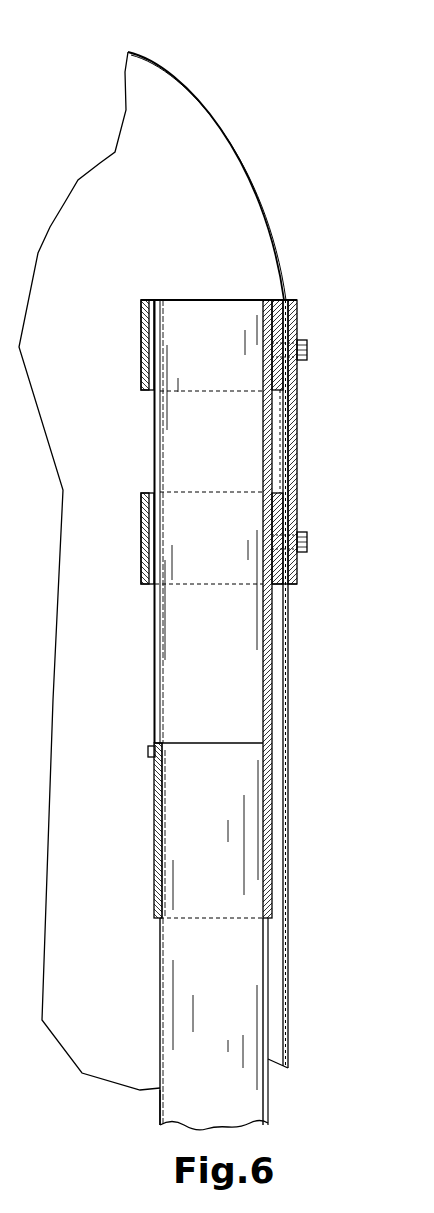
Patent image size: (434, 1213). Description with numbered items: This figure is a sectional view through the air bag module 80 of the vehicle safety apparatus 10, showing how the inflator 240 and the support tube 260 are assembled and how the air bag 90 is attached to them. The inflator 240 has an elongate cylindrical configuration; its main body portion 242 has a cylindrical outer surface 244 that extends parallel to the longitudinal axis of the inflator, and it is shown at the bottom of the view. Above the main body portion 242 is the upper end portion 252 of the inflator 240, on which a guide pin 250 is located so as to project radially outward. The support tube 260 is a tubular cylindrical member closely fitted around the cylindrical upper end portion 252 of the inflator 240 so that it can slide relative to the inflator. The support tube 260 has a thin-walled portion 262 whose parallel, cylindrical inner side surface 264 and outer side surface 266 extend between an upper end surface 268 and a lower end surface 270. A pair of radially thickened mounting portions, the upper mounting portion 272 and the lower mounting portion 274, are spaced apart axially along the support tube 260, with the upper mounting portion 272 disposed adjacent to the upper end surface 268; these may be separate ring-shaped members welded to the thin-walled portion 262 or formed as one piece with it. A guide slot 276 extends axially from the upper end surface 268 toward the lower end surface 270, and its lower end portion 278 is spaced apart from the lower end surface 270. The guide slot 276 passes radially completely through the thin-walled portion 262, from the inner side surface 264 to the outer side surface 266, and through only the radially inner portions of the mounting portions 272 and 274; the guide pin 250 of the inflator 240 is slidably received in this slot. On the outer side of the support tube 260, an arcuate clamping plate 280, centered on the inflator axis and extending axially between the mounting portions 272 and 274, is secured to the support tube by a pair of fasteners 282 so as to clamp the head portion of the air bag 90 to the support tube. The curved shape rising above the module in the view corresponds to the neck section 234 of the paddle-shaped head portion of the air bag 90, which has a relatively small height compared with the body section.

The vehicle safety apparatus 10 is at (272, 99).
The air bag module 80 is at (298, 139).
The air bag 90 is at (186, 65).
The neck section 234 is at (280, 226).
The inflator 240 is at (150, 1106).
The main body portion 242 is at (268, 1107).
The cylindrical outer surface 244 is at (218, 1073).
The guide pin 250 is at (148, 755).
The upper end portion 252 is at (222, 643).
The support tube 260 is at (146, 446).
The thin-walled portion 262 is at (155, 880).
The inner side surface 264 is at (162, 838).
The outer side surface 266 is at (153, 815).
The upper end surface 268 is at (228, 300).
The lower end surface 270 is at (157, 918).
The upper mounting portion 272 is at (141, 335).
The lower mounting portion 274 is at (141, 525).
The guide slot 276 is at (158, 645).
The lower end portion of guide slot 278 is at (155, 732).
The clamping plate 280 is at (297, 400).
The fasteners 282 is at (307, 348).